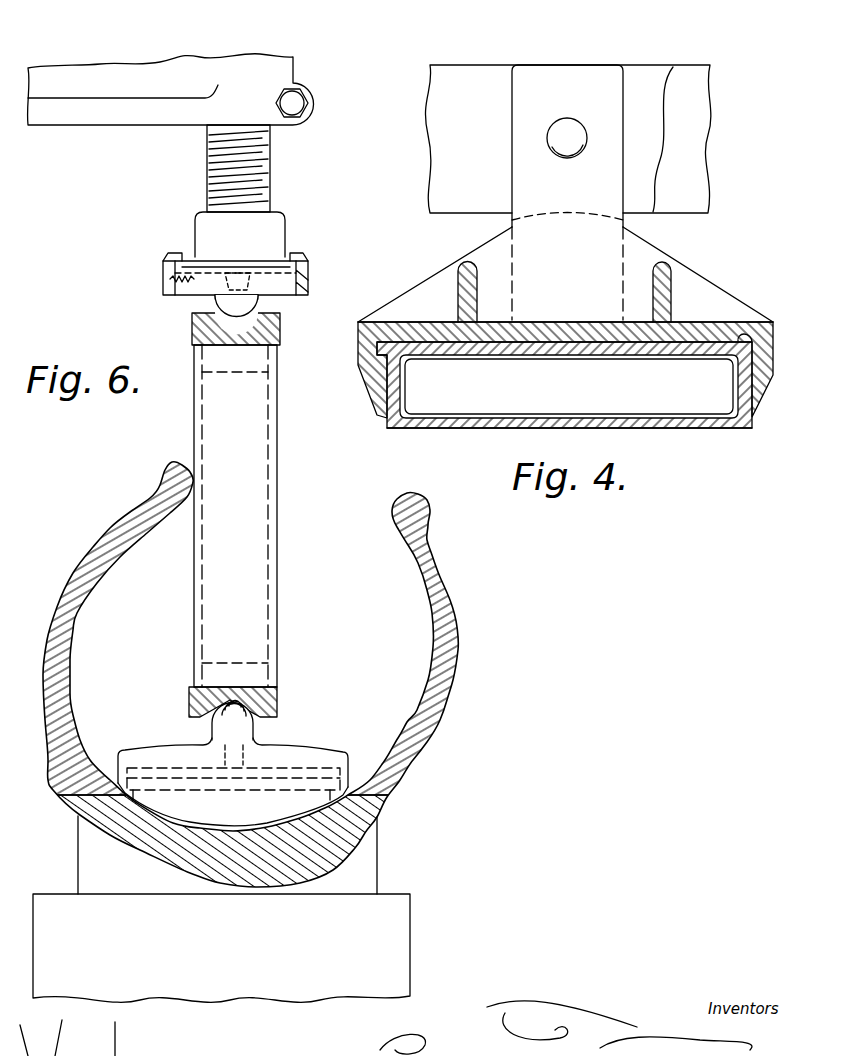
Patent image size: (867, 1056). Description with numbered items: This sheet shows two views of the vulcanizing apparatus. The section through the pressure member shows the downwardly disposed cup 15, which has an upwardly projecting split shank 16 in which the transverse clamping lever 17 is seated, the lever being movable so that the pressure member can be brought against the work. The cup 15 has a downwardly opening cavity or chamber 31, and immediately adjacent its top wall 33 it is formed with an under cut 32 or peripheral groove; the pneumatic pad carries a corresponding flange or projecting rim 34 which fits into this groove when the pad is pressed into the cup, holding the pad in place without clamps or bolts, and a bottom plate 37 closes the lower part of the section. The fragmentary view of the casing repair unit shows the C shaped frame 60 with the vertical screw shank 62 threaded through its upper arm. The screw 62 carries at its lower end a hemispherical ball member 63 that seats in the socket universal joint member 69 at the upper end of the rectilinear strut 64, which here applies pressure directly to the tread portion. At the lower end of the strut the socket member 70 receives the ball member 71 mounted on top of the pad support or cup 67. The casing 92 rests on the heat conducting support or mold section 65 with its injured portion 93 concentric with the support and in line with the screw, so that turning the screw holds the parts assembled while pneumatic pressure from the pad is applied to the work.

In FIG. 6, the C shaped frame 60 is at (283, 68).
In FIG. 6, the vertical screw shank 62 is at (263, 167).
In FIG. 6, the hemispherical ball member 63 is at (258, 303).
In FIG. 6, the strut 64 is at (213, 422).
In FIG. 6, the support or mold section 65 is at (372, 850).
In FIG. 6, the pad support or cup 67 is at (330, 747).
In FIG. 6, the universal joint member 69 is at (192, 328).
In FIG. 6, the universal joint member 70 is at (190, 693).
In FIG. 6, the ball member 71 is at (233, 723).
In FIG. 6, the casing 92 is at (250, 690).
In FIG. 6, the injured portion 93 is at (240, 867).
In FIG. 4, the cup 15 is at (569, 322).
In FIG. 4, the split shank 16 is at (620, 100).
In FIG. 4, the clamping lever 17 is at (567, 139).
In FIG. 4, the cavity or chamber 31 is at (408, 385).
In FIG. 4, the under cut 32 is at (526, 402).
In FIG. 4, the top wall 33 is at (567, 338).
In FIG. 4, the flange or projecting rim 34 is at (745, 330).
In FIG. 4, the bottom plate 37 is at (495, 432).